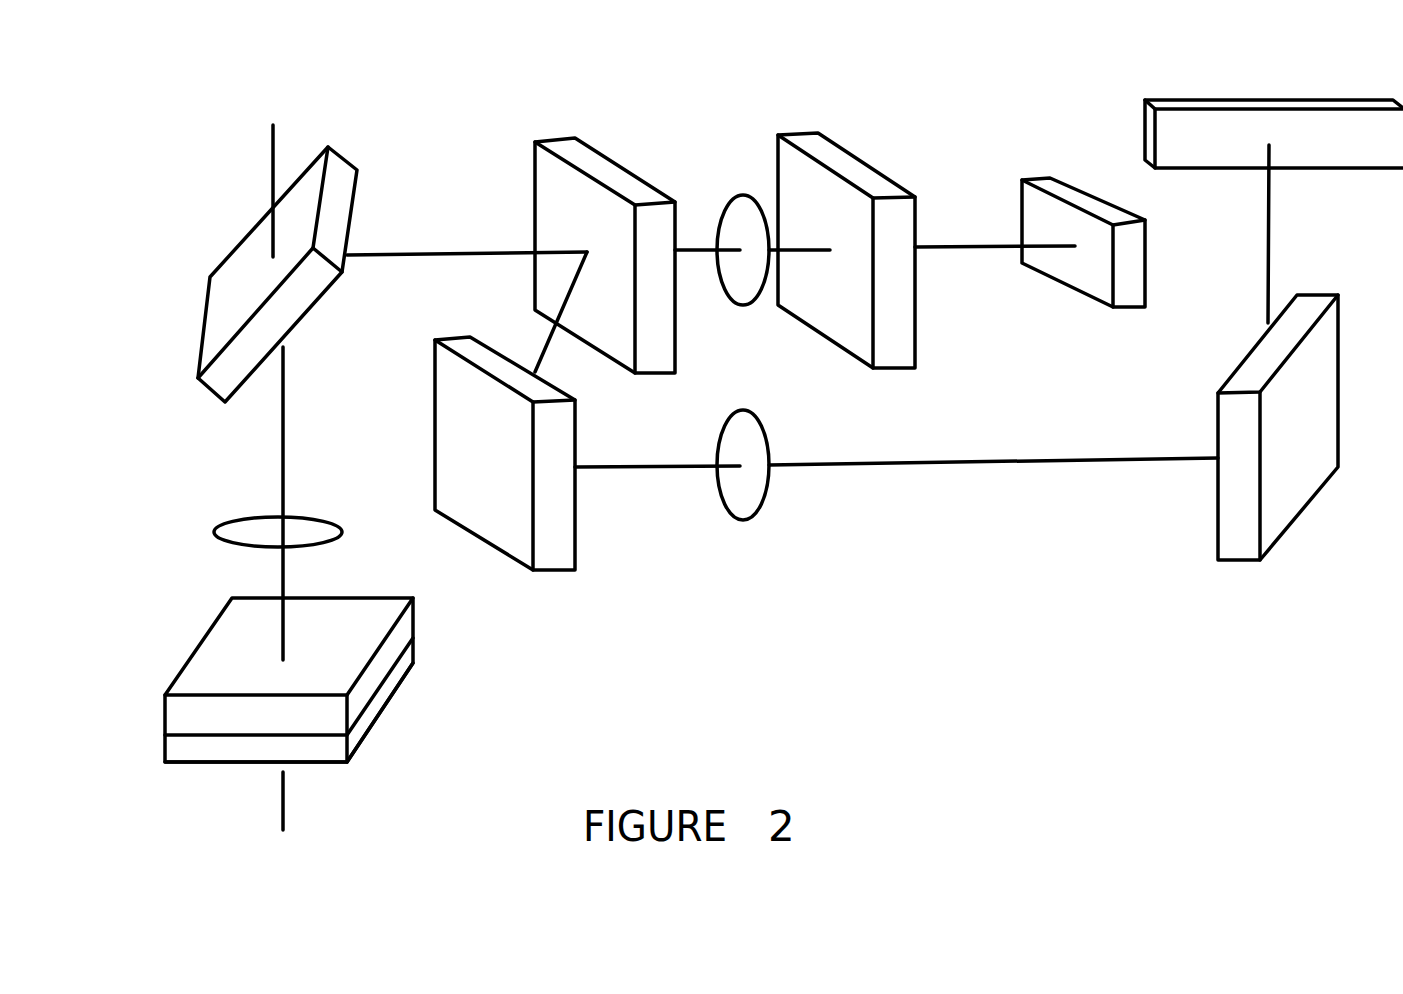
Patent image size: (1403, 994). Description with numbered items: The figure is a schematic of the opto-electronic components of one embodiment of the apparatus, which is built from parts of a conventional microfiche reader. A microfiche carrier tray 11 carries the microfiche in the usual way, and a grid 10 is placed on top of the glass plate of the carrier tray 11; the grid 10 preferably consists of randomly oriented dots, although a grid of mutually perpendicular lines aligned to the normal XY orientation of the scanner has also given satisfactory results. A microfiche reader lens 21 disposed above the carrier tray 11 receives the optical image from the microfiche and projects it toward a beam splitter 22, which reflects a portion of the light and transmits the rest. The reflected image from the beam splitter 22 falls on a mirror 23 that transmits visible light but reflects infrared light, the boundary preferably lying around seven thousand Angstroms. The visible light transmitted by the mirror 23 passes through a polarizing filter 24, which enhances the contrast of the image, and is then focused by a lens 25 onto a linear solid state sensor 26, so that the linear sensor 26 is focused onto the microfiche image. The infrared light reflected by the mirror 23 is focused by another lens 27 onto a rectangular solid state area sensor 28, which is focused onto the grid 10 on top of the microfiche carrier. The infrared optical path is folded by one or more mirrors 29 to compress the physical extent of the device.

The grid 10 is at (242, 680).
The microfiche carrier tray 11 is at (289, 728).
The microfiche reader lens 21 is at (224, 537).
The beam splitter 22 is at (225, 274).
The mirror 23 is at (602, 215).
The polarizing filter 24 is at (732, 216).
The lens 25 is at (846, 221).
The linear solid state sensor 26 is at (1080, 209).
The lens 27 is at (748, 504).
The rectangular solid state sensor 28 is at (1274, 100).
The mirrors 29 is at (886, 468).